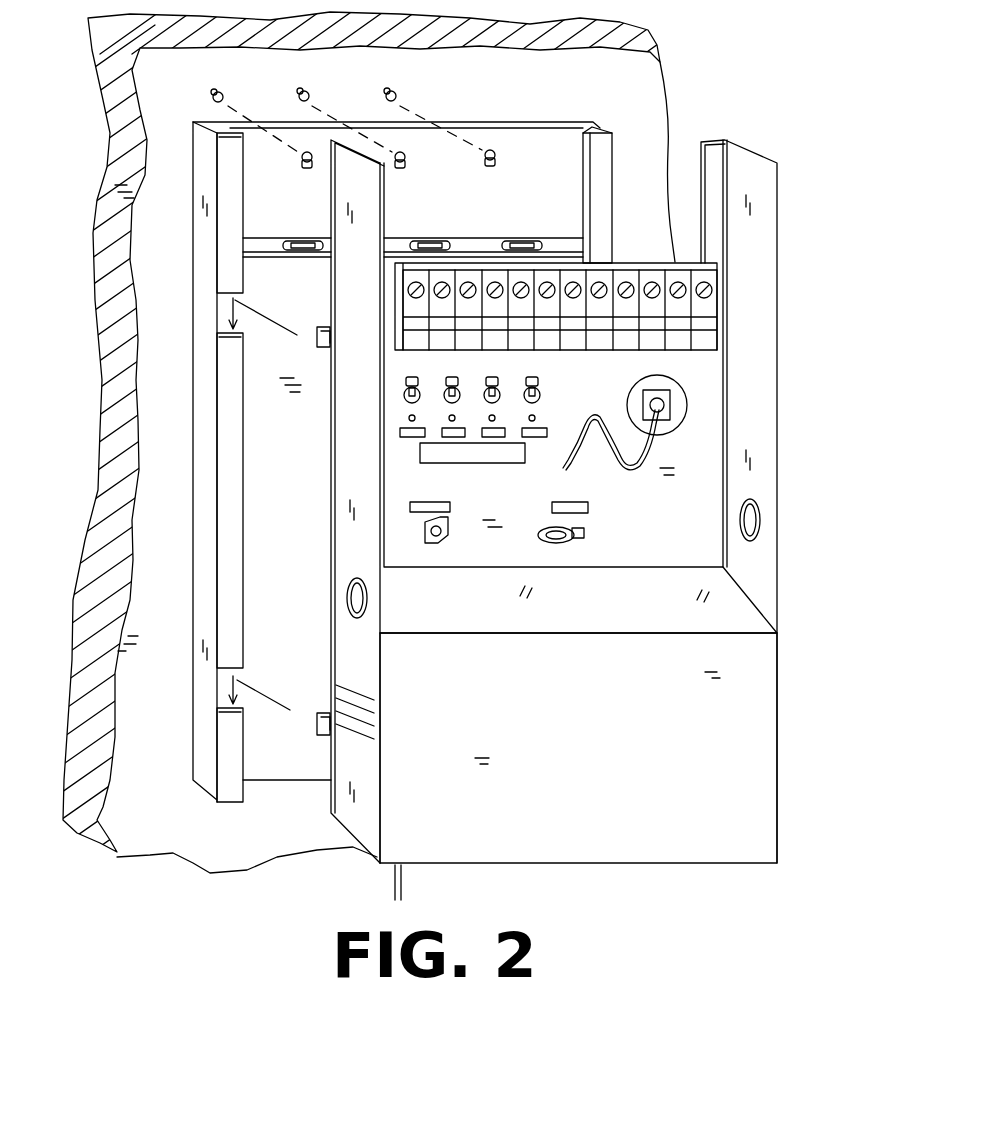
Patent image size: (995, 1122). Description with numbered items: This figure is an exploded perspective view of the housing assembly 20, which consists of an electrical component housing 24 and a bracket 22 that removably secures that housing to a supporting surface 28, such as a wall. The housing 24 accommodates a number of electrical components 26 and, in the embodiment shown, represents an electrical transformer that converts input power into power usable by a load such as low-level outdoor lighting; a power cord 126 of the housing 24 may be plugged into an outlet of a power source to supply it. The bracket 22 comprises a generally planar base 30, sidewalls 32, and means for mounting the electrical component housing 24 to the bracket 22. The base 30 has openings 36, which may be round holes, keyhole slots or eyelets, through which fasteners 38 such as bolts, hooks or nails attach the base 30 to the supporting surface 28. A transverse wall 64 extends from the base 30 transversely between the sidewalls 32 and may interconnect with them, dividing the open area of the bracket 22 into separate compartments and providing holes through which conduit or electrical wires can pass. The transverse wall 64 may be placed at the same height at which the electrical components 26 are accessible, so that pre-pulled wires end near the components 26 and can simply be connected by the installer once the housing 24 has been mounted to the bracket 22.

The housing assembly 20 is at (702, 109).
The bracket 22 is at (282, 792).
The electrical component housing 24 is at (794, 631).
The electrical components 26 is at (609, 403).
The supporting surface 28 is at (148, 242).
The base 30 is at (530, 150).
The sidewalls 32 is at (205, 428).
The openings 36 is at (307, 170).
The fasteners 38 is at (223, 100).
The transverse wall 64 is at (258, 247).
The power cord 126 is at (401, 890).